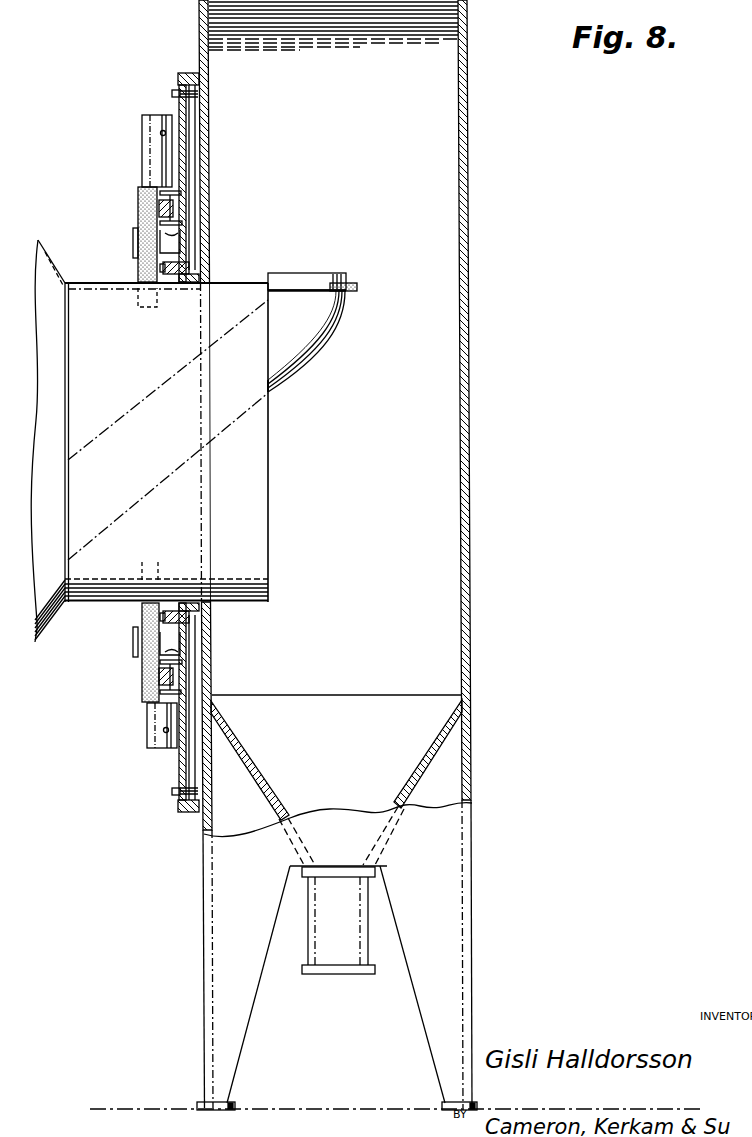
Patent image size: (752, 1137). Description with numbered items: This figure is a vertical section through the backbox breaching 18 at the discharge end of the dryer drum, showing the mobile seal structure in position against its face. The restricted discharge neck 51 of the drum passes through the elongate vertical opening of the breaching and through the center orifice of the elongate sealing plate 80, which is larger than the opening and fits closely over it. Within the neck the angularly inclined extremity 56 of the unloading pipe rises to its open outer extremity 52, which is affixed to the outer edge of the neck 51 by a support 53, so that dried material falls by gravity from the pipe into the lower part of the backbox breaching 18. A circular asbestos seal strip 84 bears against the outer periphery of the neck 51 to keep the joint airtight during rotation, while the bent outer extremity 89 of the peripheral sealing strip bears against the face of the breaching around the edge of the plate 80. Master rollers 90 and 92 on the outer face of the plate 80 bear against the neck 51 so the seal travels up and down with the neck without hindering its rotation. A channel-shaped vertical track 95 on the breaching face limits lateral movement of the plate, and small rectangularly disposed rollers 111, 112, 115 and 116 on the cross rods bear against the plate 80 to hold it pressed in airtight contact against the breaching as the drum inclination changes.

The backbox breaching 18 is at (333, 89).
The discharge neck 51 is at (196, 513).
The open outer extremity of unloading pipe 52 is at (306, 274).
The support 53 is at (352, 287).
The angular extremity of unloading pipe 56 is at (154, 389).
The sealing plate 80 is at (190, 145).
The circular asbestos seal strip 84 is at (172, 276).
The outer extremity of peripheral sealing strip 89 is at (197, 72).
The master roller 90 is at (148, 197).
The master roller 92 is at (147, 688).
The vertical track 95 is at (160, 143).
The rectangularly disposed roller 111 is at (165, 190).
The rectangularly disposed roller 112 is at (165, 230).
The rectangularly disposed roller 115 is at (165, 665).
The rectangularly disposed roller 116 is at (170, 697).